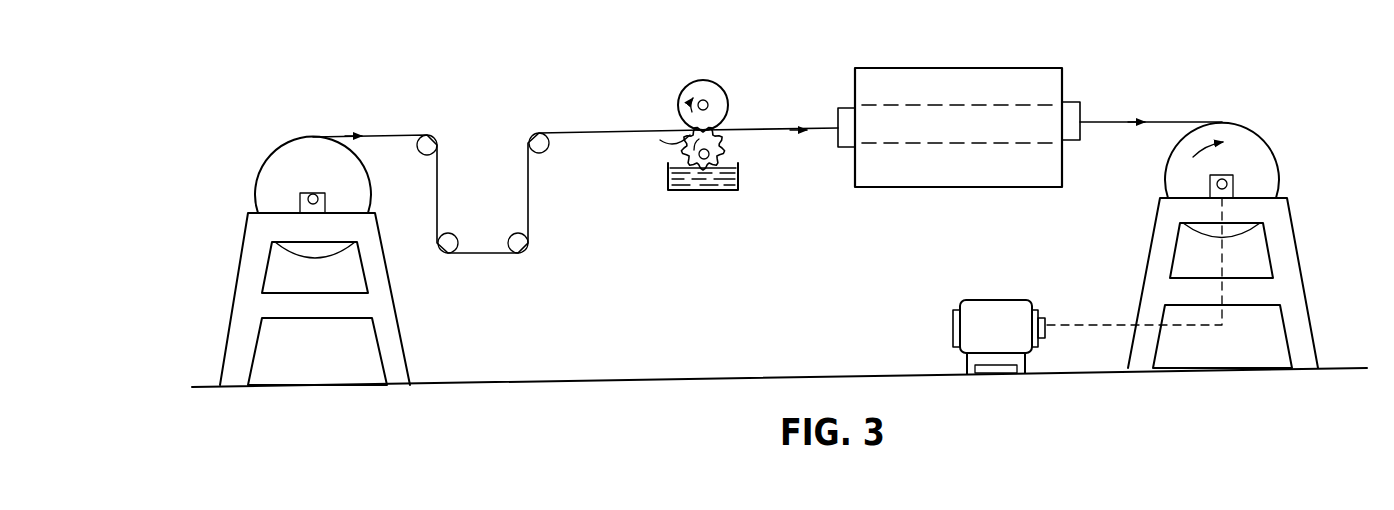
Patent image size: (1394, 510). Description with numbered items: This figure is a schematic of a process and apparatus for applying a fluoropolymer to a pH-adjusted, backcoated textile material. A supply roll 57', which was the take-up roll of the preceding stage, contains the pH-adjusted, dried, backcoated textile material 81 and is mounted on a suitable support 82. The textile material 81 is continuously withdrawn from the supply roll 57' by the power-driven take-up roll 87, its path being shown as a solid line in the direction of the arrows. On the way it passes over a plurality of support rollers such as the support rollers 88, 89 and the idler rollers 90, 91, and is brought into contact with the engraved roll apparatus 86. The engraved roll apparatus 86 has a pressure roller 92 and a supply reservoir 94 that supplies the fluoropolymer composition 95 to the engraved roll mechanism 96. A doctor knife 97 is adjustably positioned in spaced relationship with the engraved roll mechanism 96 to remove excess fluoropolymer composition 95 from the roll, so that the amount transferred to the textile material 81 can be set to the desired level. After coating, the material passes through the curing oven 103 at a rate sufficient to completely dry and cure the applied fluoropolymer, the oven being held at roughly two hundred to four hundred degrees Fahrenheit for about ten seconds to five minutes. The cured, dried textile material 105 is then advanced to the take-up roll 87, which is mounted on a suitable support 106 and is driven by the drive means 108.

The supply roll 57' is at (299, 171).
The textile material 81 is at (392, 134).
The support 82 is at (243, 273).
The engraved roll apparatus 86 is at (867, 139).
The take-up roll 87 is at (1228, 122).
The support roller 88 is at (429, 156).
The support roller 89 is at (541, 154).
The idler roller 90 is at (447, 231).
The idler roller 91 is at (524, 251).
The pressure roller 92 is at (712, 80).
The supply reservoir 94 is at (678, 192).
The fluoropolymer composition 95 is at (715, 183).
The engraved roll mechanism 96 is at (727, 145).
The doctor knife 97 is at (680, 146).
The curing oven 103 is at (993, 73).
The cured, dried textile material 105 is at (1115, 118).
The support 106 is at (1300, 263).
The drive means 108 is at (972, 305).